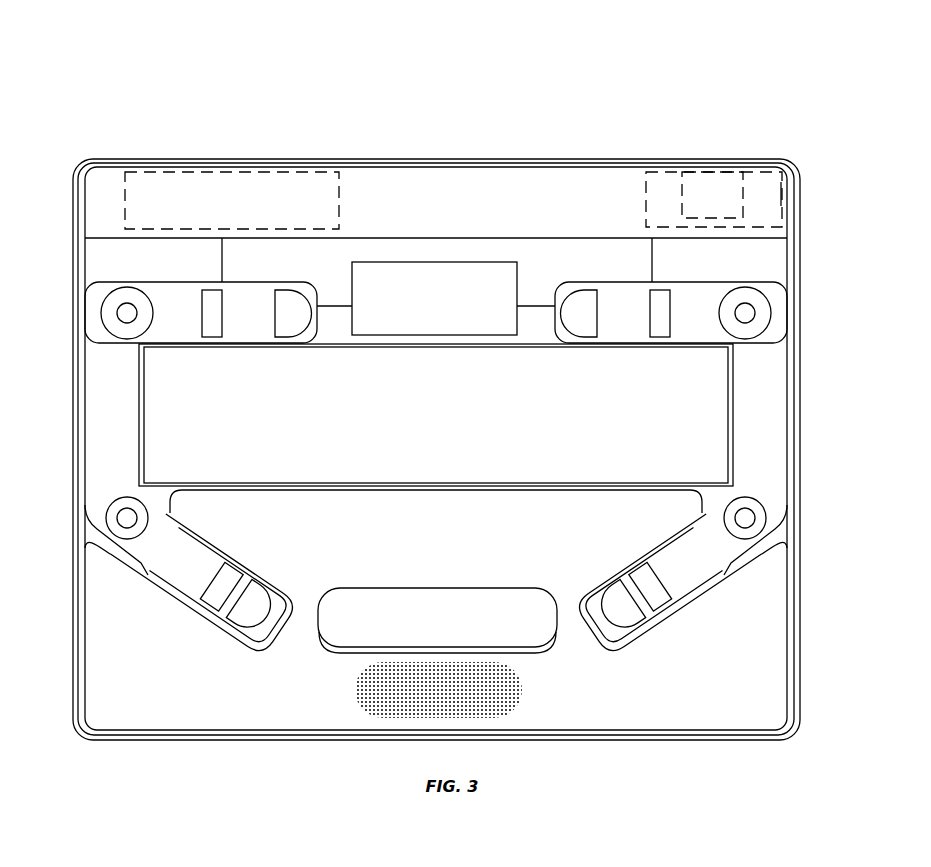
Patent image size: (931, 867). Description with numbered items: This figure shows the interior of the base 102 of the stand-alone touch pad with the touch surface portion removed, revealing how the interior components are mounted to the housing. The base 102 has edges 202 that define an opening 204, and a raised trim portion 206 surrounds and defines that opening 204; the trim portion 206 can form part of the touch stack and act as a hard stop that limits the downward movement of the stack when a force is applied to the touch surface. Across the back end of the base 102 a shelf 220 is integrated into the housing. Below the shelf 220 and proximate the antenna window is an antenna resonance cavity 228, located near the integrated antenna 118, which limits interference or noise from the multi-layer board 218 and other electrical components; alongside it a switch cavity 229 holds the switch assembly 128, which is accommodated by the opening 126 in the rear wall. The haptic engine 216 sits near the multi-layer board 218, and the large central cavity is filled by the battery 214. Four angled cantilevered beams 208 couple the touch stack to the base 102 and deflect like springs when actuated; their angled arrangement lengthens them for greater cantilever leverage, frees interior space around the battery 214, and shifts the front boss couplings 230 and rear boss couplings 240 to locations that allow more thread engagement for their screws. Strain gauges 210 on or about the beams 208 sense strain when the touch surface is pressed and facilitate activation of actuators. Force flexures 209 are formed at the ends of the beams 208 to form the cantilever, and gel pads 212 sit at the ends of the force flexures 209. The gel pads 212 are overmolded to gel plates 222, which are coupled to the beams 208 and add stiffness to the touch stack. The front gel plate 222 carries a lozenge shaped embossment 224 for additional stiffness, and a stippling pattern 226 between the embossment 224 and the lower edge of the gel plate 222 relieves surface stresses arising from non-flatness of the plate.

The base 102 is at (440, 66).
The integrated antenna 118 is at (232, 158).
The opening 126 is at (714, 157).
The switch assembly 128 is at (712, 195).
The edges 202 is at (806, 222).
The opening 204 is at (793, 256).
The raised trim portion 206 is at (794, 287).
The cantilevered beams 208 is at (475, 448).
The force flexures 209 is at (620, 330).
The strain gauges 210 is at (662, 328).
The gel pads 212 is at (583, 328).
The battery 214 is at (436, 415).
The haptic engine 216 is at (436, 298).
The multi-layer board 218 is at (211, 297).
The shelf 220 is at (436, 235).
The gel plates 222 is at (305, 524).
The lozenge shaped embossment 224 is at (437, 620).
The stippling pattern 226 is at (525, 680).
The antenna resonance cavity 228 is at (232, 200).
The switch cavity 229 is at (765, 195).
The front boss couplings 230 is at (752, 530).
The rear boss couplings 240 is at (752, 330).